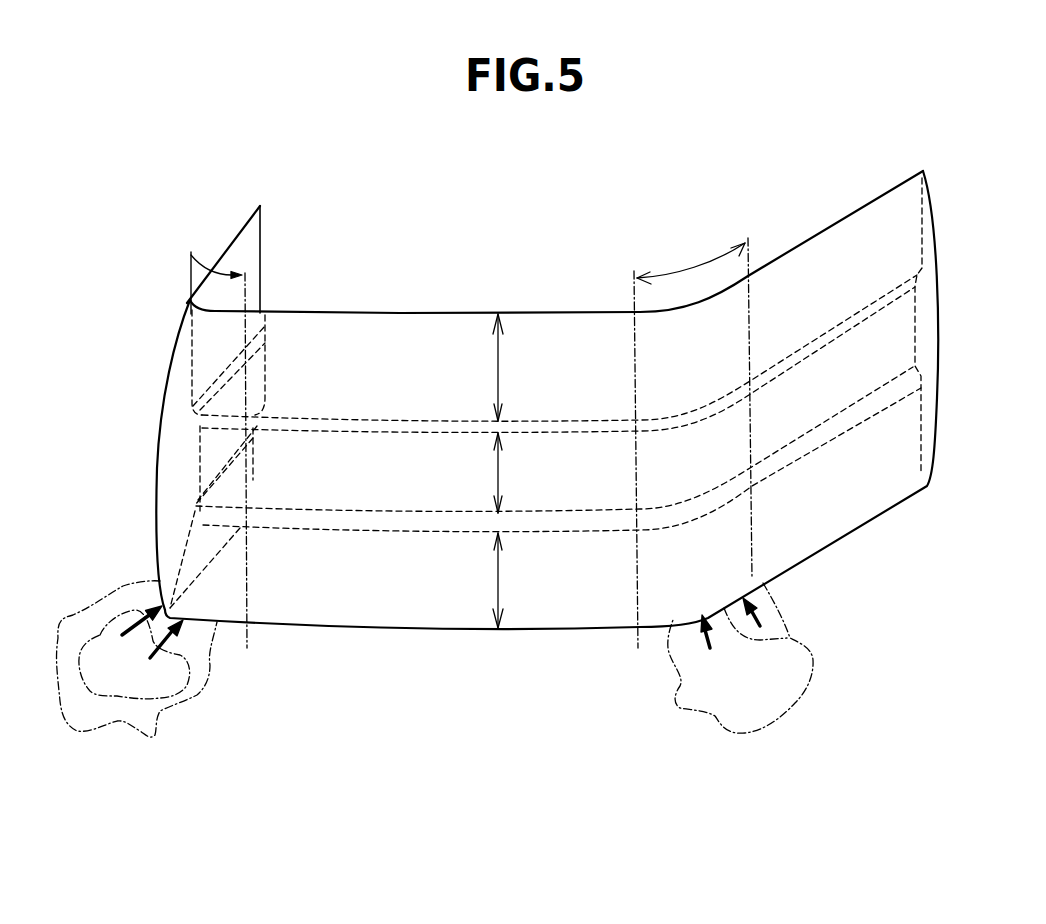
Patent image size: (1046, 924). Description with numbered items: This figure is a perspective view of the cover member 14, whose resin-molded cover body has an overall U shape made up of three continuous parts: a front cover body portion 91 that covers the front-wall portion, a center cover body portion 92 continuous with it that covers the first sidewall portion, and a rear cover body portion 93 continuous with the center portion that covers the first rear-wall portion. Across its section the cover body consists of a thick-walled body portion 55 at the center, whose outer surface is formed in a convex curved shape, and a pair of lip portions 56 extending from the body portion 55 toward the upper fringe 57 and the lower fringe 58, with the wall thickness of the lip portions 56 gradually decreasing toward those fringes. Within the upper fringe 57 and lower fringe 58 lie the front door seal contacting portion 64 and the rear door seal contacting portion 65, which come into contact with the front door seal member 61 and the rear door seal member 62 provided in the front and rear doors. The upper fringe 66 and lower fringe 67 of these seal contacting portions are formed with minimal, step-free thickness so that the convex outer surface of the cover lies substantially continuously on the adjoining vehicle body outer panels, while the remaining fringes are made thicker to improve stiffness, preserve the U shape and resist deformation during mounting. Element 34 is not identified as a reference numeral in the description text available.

The cover member 14 is at (305, 125).
The front cover body portion 91 is at (228, 250).
The front door seal contacting portion 64 is at (220, 275).
The upper fringe 66 is at (214, 308).
The rear door seal contacting portion 65 is at (698, 270).
The board main body 34 is at (405, 347).
The body portion 55 is at (498, 473).
The lip portions 56 is at (498, 357).
The upper fringe 57 is at (605, 310).
The lower fringe 58 is at (586, 633).
The center cover body portion 92 is at (393, 615).
The rear cover body portion 93 is at (842, 503).
The lower fringe 67 is at (193, 624).
The front door seal member 61 is at (135, 737).
The rear door seal member 62 is at (743, 737).